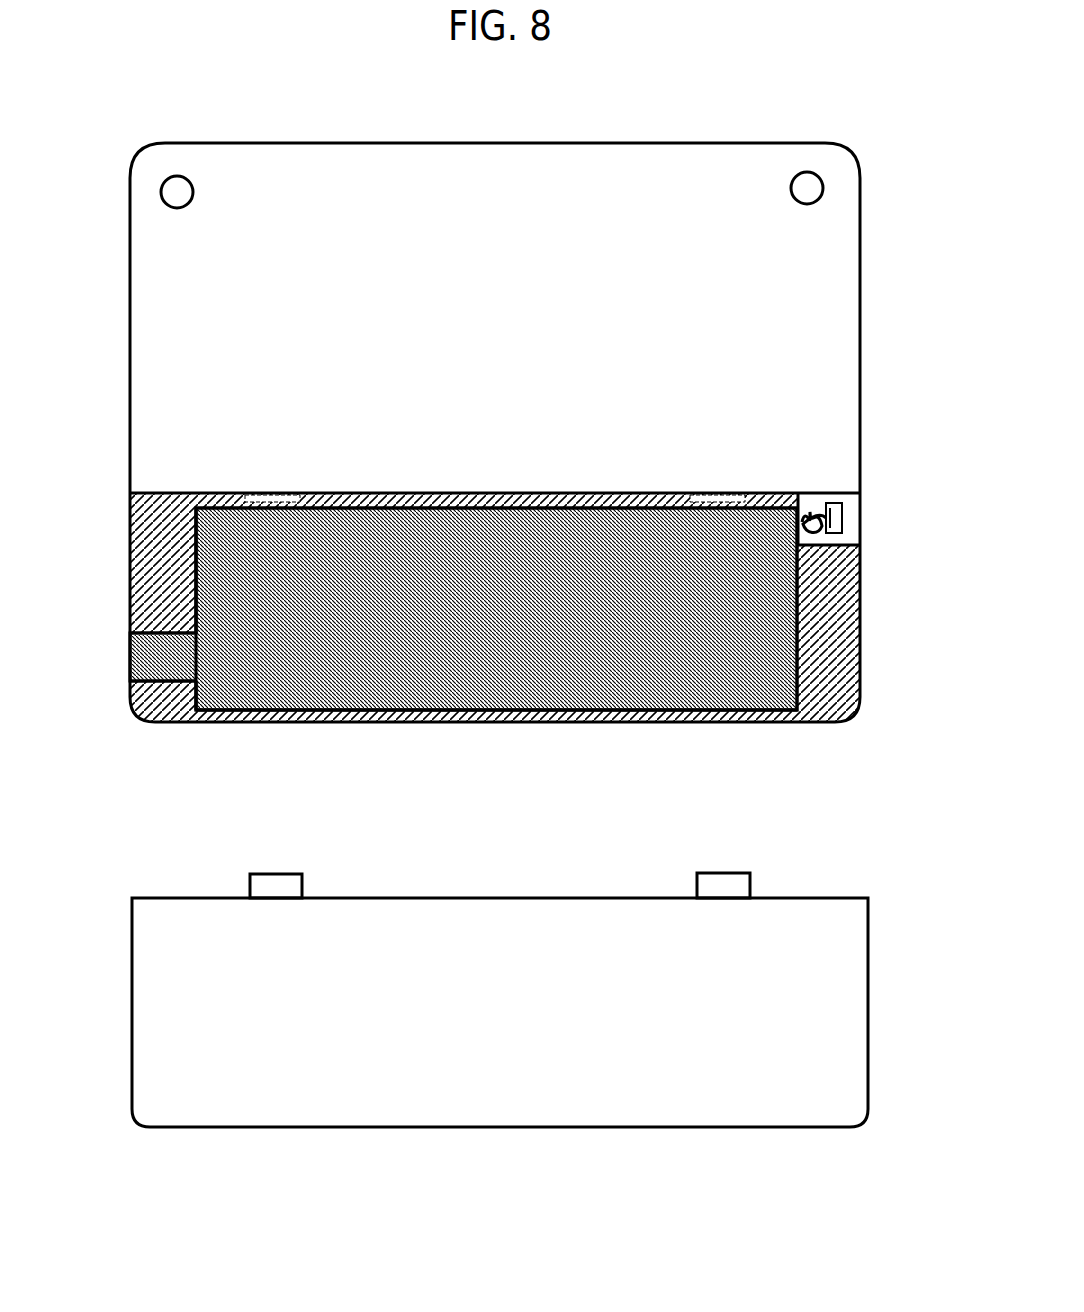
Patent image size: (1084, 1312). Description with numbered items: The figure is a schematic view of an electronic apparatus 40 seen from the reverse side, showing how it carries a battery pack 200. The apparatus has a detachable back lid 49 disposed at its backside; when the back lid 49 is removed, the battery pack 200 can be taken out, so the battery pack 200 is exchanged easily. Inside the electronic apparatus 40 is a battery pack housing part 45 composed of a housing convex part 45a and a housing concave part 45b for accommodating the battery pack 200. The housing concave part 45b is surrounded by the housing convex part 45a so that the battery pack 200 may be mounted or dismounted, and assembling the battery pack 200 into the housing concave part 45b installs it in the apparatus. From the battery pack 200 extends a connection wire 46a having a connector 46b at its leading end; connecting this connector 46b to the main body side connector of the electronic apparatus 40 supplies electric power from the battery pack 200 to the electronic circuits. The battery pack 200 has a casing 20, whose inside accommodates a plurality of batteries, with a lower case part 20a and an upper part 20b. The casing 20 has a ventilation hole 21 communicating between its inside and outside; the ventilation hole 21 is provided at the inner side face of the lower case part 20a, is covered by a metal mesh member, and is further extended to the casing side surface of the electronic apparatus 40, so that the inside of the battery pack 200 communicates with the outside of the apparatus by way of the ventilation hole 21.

The electronic apparatus 40 is at (423, 143).
The battery pack housing part 45 is at (852, 600).
The housing convex part 45a is at (148, 552).
The housing concave part 45b is at (850, 535).
The connection wire 46a is at (810, 505).
The connector 46b is at (840, 503).
The casing 20 is at (472, 808).
The lower case part 20a is at (318, 710).
The second electrode layer 20b is at (393, 660).
The battery pack 200 is at (570, 695).
The ventilation hole 21 is at (180, 668).
The back lid 49 is at (790, 897).